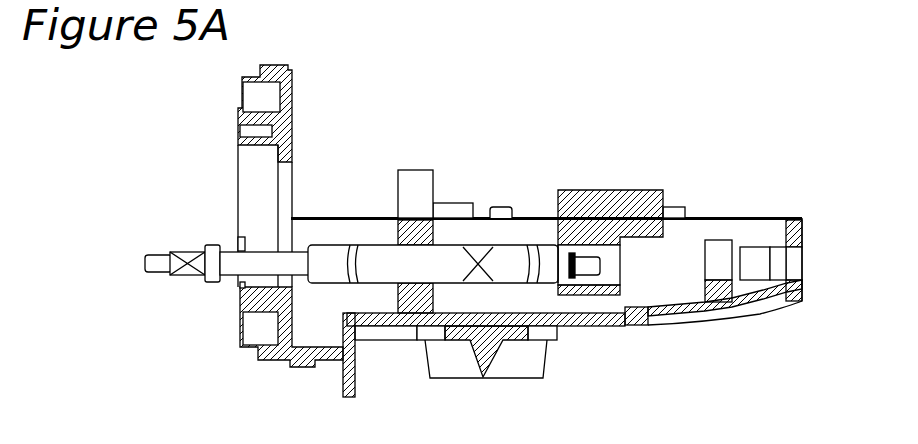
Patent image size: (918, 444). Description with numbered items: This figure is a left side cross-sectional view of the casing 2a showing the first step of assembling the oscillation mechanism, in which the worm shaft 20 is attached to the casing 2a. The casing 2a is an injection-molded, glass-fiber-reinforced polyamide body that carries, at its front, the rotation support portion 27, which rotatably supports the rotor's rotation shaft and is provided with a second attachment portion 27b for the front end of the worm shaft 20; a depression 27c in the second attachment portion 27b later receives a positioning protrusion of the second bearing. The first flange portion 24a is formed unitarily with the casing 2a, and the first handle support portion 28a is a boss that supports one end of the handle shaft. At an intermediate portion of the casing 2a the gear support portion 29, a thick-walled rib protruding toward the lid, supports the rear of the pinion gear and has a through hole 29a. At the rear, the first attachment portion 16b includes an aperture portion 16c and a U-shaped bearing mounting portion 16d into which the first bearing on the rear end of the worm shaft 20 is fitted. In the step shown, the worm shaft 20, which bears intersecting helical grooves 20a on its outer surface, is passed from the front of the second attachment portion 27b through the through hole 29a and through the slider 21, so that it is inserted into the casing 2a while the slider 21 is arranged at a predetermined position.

The casing 2a is at (637, 313).
The first attachment portion 16b is at (722, 243).
The aperture portion 16c is at (709, 242).
The bearing mounting portion 16d is at (725, 260).
The worm shaft 20 is at (333, 258).
The intersecting helical grooves 20a is at (488, 247).
The slider 21 is at (613, 197).
The first flange portion 24a is at (343, 389).
The rotation support portion 27 is at (293, 95).
The second attachment portion 27b is at (240, 283).
The depression 27c is at (240, 243).
The first handle support portion 28a is at (527, 365).
The gear support portion 29 is at (429, 170).
The through hole 29a is at (417, 274).